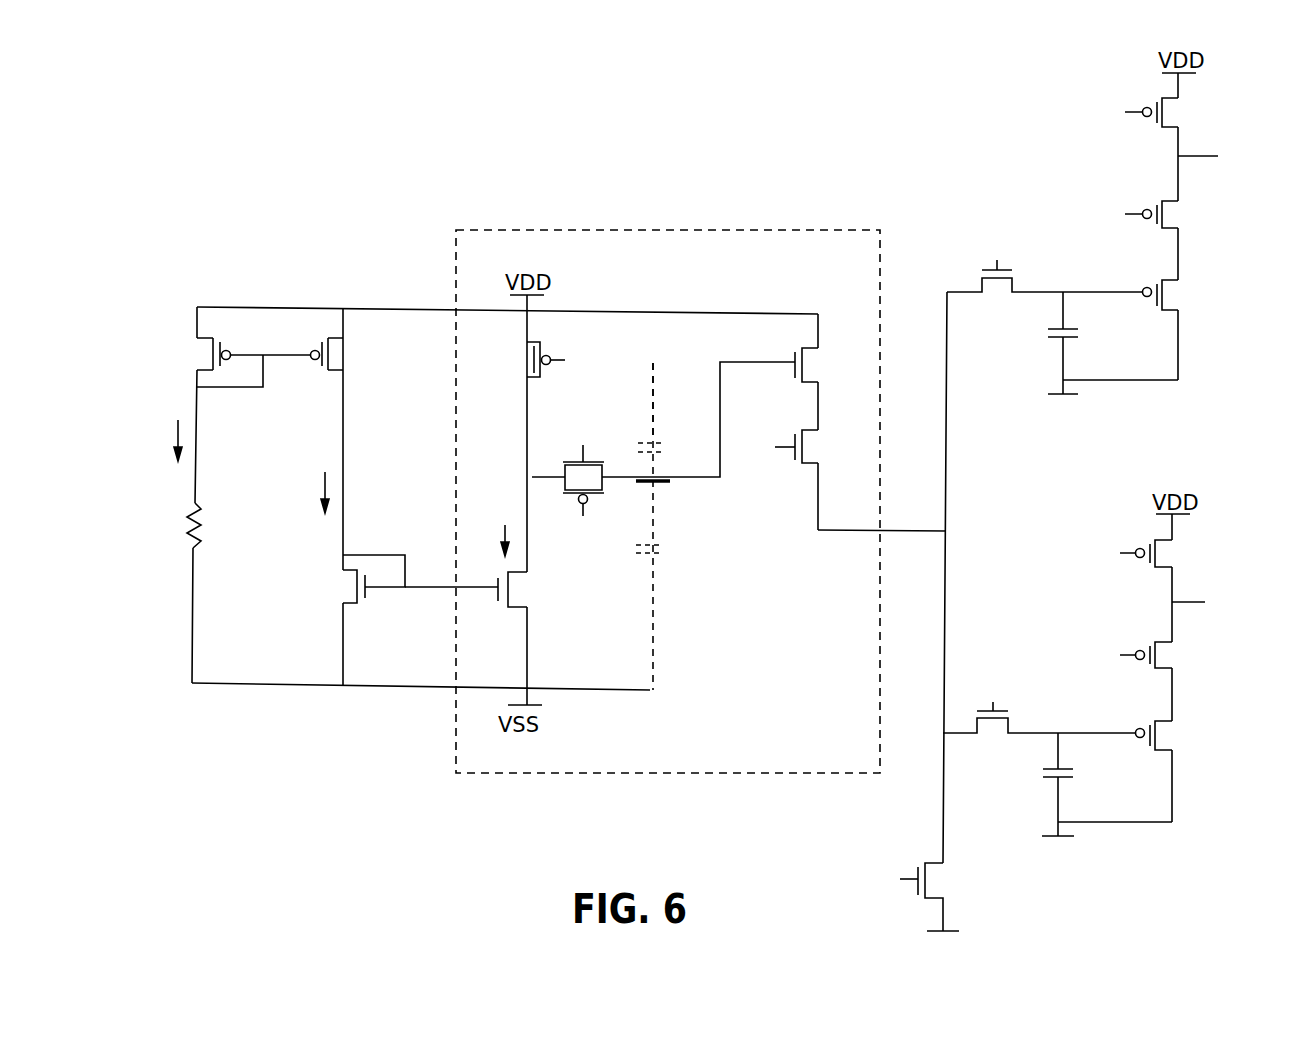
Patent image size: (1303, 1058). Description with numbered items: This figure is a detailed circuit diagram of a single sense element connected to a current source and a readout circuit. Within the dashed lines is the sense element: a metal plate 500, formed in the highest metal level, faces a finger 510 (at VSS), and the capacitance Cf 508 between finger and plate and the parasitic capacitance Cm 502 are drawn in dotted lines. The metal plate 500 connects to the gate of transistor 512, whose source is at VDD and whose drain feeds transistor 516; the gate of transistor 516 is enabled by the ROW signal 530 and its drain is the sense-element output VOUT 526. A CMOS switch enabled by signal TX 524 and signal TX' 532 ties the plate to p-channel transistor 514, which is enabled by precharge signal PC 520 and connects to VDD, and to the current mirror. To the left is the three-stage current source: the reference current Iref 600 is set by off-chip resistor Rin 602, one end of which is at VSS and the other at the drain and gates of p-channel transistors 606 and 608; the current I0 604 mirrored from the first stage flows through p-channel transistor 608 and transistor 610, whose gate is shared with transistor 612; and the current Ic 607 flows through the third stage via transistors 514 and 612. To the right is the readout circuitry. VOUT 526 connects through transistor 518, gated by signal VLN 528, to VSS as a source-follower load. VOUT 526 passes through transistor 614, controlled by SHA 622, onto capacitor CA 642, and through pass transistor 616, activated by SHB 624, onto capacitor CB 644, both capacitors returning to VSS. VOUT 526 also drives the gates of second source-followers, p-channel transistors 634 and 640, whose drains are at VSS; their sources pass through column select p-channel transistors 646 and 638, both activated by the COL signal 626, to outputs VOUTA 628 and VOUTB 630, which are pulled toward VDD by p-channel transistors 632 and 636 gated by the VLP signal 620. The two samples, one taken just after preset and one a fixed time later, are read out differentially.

The metal plate 500 is at (668, 483).
The capacitance Cm 502 is at (676, 565).
The capacitance Cf 508 is at (671, 444).
The finger 510 is at (679, 381).
The transistor 512 is at (826, 365).
The p-channel transistor 514 is at (520, 359).
The transistor 516 is at (826, 446).
The transistor 518 is at (946, 913).
The precharge signal PC 520 is at (583, 359).
The signal TX 524 is at (583, 428).
The output VOUT 526 is at (917, 577).
The signal VLN 528 is at (885, 883).
The ROW signal 530 is at (760, 446).
The signal TX' 532 is at (585, 530).
The reference current Iref 600 is at (155, 442).
The resistor Rin 602 is at (218, 532).
The current I0 604 is at (310, 479).
The p-channel transistor 606 is at (235, 362).
The current Ic 607 is at (488, 527).
The p-channel transistor 608 is at (348, 354).
The transistor 610 is at (356, 579).
The transistor 612 is at (482, 589).
The transistor 614 is at (1044, 295).
The pass transistor 616 is at (1039, 740).
The VLP signal 620 is at (1109, 325).
The control signal SHA 622 is at (1000, 239).
The signal SHB 624 is at (997, 677).
The COL signal 626 is at (1108, 428).
The output VOUTA 628 is at (1227, 159).
The output VOUTB 630 is at (1222, 604).
The p-channel transistor 632 is at (1181, 113).
The p-channel transistor 634 is at (1181, 296).
The p-channel transistor 636 is at (1174, 553).
The p-channel transistor 638 is at (1174, 656).
The p-channel transistor 640 is at (1173, 735).
The capacitor CA 642 is at (1093, 357).
The capacitor CB 644 is at (1087, 799).
The p-channel transistor 646 is at (1180, 215).